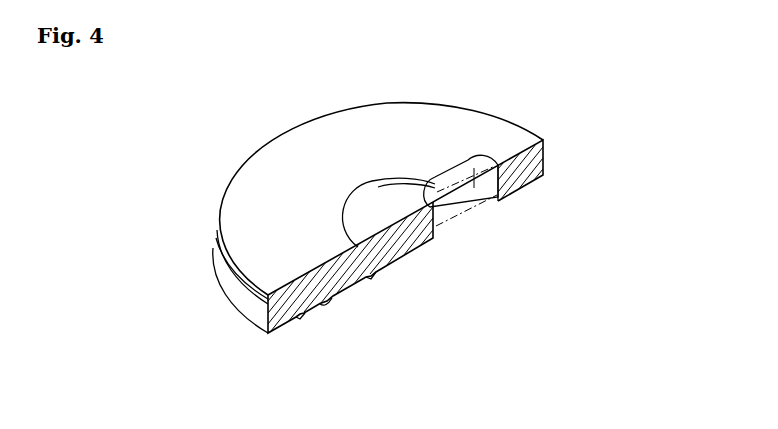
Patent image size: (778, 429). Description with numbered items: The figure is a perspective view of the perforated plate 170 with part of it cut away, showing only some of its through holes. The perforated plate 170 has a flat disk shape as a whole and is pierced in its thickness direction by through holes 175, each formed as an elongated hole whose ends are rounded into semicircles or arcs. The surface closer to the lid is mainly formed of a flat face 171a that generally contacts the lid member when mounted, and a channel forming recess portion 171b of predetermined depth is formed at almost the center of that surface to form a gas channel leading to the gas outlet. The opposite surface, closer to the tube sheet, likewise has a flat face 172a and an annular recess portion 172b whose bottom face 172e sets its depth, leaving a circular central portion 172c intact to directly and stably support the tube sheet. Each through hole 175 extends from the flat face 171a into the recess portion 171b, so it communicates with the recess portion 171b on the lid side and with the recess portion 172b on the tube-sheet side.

The perforated plate 170 is at (222, 98).
The flat face 171a is at (310, 148).
The channel forming recess portion 171b is at (383, 207).
The flat face 172a is at (288, 320).
The recess portion 172b is at (362, 280).
The central portion 172c is at (420, 250).
The bottom face 172e is at (326, 302).
The through hole 175 is at (459, 180).